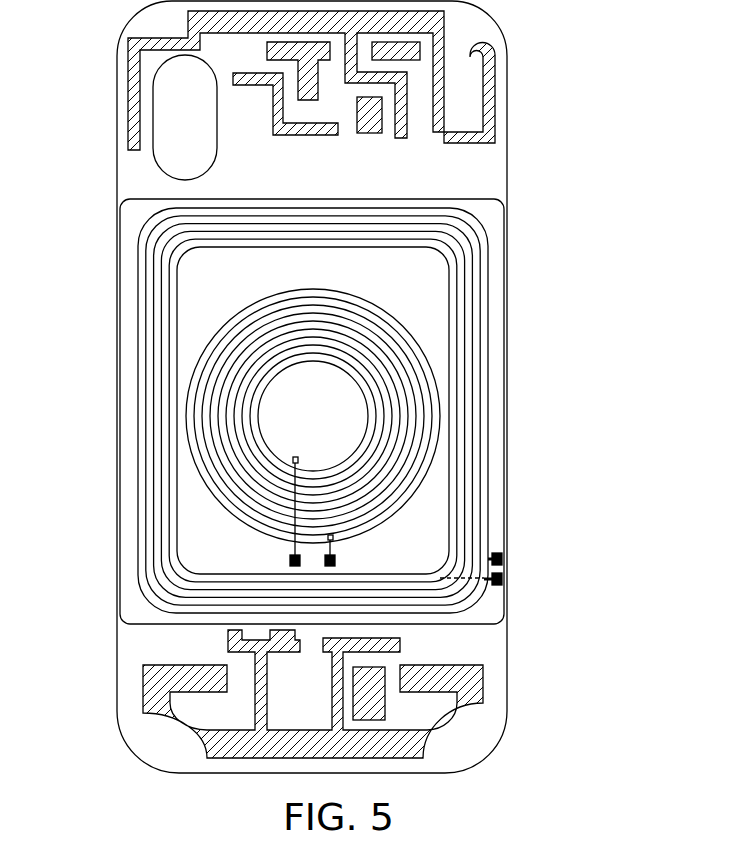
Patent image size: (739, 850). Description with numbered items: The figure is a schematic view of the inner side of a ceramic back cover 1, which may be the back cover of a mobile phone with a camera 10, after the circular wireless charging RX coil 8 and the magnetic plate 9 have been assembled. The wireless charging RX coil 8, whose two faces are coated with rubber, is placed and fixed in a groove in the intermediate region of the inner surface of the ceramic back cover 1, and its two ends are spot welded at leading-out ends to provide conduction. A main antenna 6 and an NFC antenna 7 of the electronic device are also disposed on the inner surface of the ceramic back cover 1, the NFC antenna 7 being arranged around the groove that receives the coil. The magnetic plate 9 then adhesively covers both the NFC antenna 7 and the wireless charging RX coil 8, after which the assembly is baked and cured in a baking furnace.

The ceramic back cover 1 is at (518, 255).
The main antenna 6 is at (473, 163).
The NFC antenna 7 is at (498, 375).
The wireless charging RX coil 8 is at (422, 505).
The magnetic plate 9 is at (473, 630).
The camera 10 is at (147, 172).